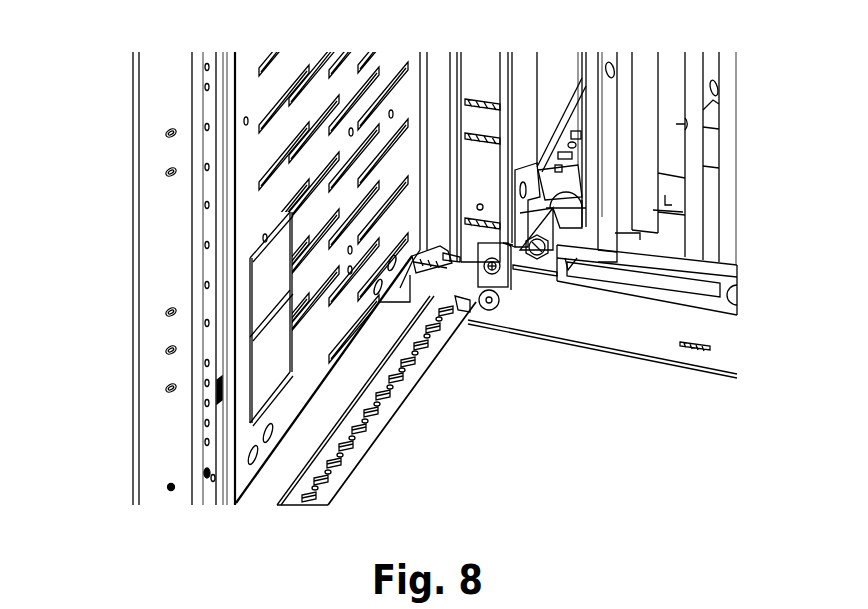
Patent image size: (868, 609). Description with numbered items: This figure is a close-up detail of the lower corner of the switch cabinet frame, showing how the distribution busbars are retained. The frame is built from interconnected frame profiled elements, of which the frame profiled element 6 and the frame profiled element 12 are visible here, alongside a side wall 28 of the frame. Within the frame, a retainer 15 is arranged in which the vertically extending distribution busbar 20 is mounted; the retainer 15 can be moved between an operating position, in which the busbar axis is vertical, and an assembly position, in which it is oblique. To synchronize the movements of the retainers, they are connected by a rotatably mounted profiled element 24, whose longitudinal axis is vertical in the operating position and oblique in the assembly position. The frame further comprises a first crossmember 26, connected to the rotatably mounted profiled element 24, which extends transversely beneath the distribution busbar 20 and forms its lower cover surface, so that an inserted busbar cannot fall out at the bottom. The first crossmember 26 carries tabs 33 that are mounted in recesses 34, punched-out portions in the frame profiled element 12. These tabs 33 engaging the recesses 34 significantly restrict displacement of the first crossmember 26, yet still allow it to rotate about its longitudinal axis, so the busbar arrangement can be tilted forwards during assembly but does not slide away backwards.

The frame profiled element 6 is at (150, 435).
The frame profiled element 12 is at (365, 443).
The retainer 15 is at (725, 262).
The distribution busbar 20 is at (707, 67).
The rotatably mounted profiled element 24 is at (488, 69).
The first crossmember 26 is at (718, 355).
The side wall 28 is at (240, 372).
The tab 33 is at (462, 306).
The recess 34 is at (436, 297).